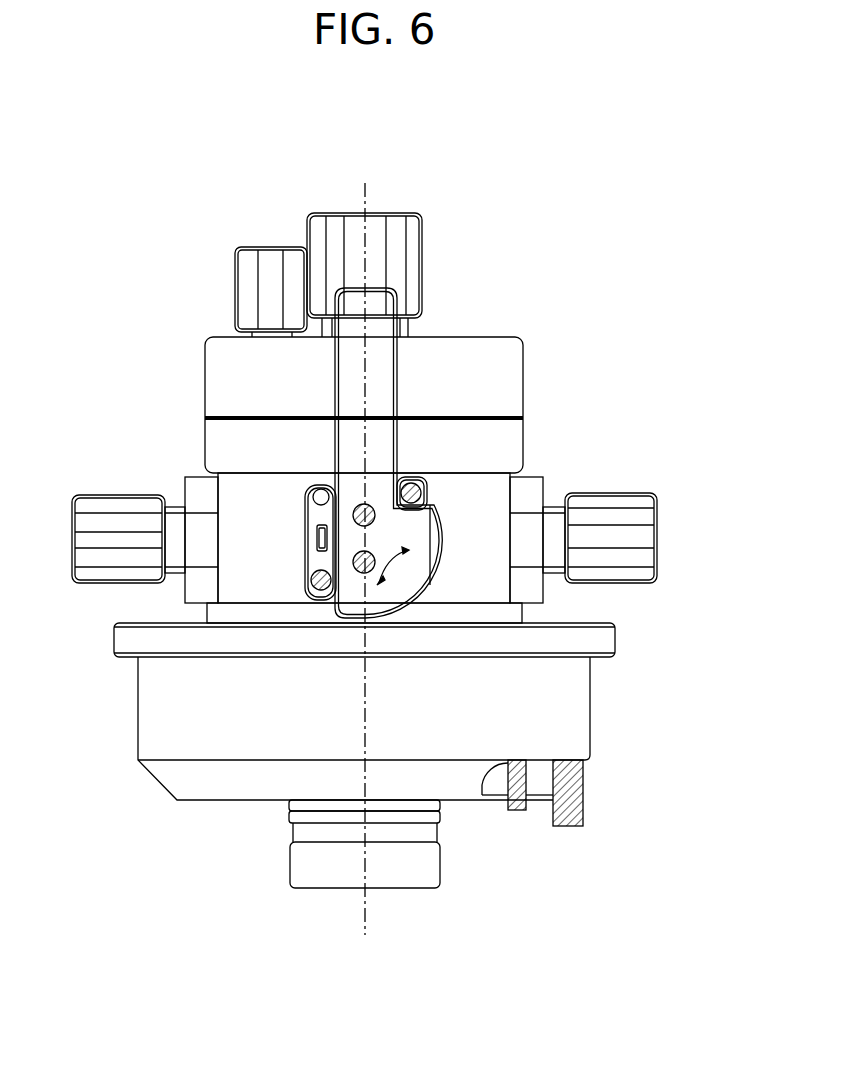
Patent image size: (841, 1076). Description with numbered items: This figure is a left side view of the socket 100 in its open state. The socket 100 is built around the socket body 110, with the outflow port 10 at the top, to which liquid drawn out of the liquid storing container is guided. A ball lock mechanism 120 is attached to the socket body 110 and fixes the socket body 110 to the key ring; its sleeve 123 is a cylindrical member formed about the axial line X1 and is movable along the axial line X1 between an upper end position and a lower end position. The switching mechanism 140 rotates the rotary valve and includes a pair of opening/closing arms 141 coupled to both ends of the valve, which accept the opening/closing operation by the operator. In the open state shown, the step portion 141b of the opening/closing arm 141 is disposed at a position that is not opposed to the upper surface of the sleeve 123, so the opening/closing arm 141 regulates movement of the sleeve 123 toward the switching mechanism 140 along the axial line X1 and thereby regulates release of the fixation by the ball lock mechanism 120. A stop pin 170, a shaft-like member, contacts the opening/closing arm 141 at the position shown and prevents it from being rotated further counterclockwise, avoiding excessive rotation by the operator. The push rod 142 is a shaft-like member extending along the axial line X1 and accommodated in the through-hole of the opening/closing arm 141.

The outflow port 10 is at (424, 233).
The socket 100 is at (597, 292).
The socket body 110 is at (525, 380).
The ball lock mechanism 120 is at (426, 745).
The sleeve 123 is at (594, 713).
The switching mechanism 140 is at (484, 453).
The opening/closing arm 141 is at (364, 526).
The step portion 141b is at (438, 522).
The push rod 142 is at (315, 535).
The stop pin 170 is at (320, 489).
The axial line X1 is at (365, 920).